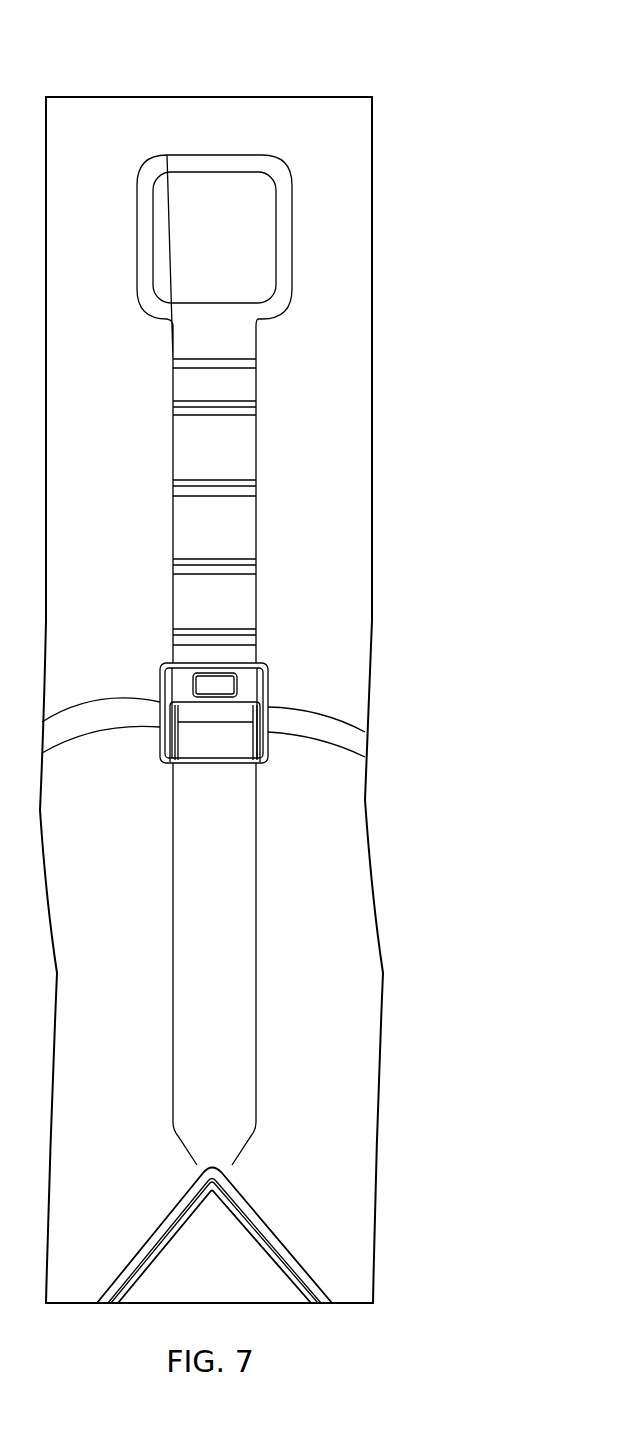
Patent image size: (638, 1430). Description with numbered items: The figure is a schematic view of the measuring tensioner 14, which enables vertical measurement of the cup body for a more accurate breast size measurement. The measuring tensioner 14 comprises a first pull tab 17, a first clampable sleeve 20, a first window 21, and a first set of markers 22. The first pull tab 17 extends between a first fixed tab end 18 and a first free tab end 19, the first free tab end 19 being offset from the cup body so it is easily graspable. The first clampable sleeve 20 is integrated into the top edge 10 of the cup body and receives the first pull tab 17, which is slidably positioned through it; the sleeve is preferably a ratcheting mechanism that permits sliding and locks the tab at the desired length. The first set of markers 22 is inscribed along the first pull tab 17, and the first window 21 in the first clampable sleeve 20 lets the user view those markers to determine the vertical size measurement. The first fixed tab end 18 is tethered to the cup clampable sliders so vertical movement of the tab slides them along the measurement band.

The measuring tensioner 14 is at (127, 57).
The first free tab end 19 is at (146, 236).
The first pull tab 17 is at (250, 850).
The first set of markers 22 is at (205, 465).
The top edge 10 is at (288, 712).
The first clampable sleeve 20 is at (158, 748).
The first window 21 is at (193, 690).
The first fixed tab end 18 is at (197, 1122).